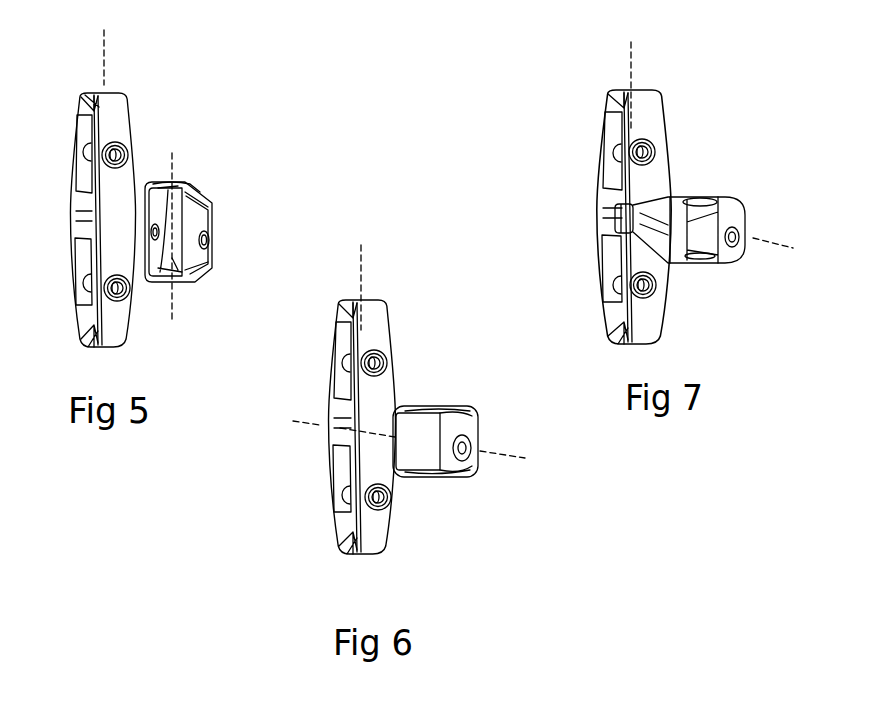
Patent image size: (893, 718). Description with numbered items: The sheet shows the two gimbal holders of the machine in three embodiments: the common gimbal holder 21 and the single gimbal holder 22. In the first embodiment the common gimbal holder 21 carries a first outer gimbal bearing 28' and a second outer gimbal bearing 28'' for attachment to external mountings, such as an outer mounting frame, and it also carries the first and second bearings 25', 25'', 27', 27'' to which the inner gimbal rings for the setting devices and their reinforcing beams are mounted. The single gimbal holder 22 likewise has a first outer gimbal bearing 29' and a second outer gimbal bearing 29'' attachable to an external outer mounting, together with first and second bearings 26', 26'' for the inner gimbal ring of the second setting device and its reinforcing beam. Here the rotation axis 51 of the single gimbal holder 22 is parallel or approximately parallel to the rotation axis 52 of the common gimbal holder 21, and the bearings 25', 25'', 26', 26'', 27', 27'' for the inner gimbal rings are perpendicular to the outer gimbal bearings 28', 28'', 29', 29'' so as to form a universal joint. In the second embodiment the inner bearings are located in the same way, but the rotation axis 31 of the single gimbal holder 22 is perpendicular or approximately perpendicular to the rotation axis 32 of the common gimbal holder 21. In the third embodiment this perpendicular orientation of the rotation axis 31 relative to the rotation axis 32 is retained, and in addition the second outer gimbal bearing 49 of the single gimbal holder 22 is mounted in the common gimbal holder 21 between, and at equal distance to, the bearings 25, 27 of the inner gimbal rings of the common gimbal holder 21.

In FIG. 5, the common gimbal holder 21 is at (118, 193).
In FIG. 6, the common gimbal holder 21 is at (370, 452).
In FIG. 7, the common gimbal holder 21 is at (628, 185).
In FIG. 5, the single gimbal holder 22 is at (192, 210).
In FIG. 6, the single gimbal holder 22 is at (455, 420).
In FIG. 7, the single gimbal holder 22 is at (718, 205).
In FIG. 7, the bearing of the inner gimbal ring 25 is at (671, 135).
In FIG. 5, the first bearing 25' is at (154, 120).
In FIG. 5, the second bearing 25'' is at (52, 126).
In FIG. 5, the first bearing 26' is at (86, 201).
In FIG. 5, the second bearing 26'' is at (244, 242).
In FIG. 7, the bearing of the inner gimbal ring 27 is at (678, 301).
In FIG. 5, the first bearing 27' is at (188, 291).
In FIG. 5, the second bearing 27'' is at (50, 273).
In FIG. 5, the first outer gimbal bearing 28' is at (122, 79).
In FIG. 5, the second outer gimbal bearing 28'' is at (137, 345).
In FIG. 5, the first outer gimbal bearing 29' is at (205, 150).
In FIG. 5, the second outer gimbal bearing 29'' is at (238, 223).
In FIG. 6, the rotation axis 31 is at (311, 422).
In FIG. 7, the rotation axis 31 is at (758, 238).
In FIG. 6, the rotation axis 32 is at (363, 266).
In FIG. 7, the rotation axis 32 is at (634, 64).
In FIG. 7, the second outer gimbal bearing 49 is at (628, 215).
In FIG. 5, the rotation axis 51 is at (174, 307).
In FIG. 5, the rotation axis 52 is at (102, 50).